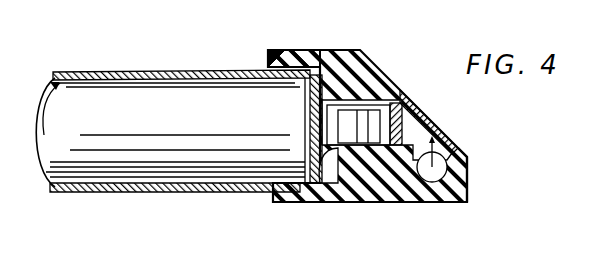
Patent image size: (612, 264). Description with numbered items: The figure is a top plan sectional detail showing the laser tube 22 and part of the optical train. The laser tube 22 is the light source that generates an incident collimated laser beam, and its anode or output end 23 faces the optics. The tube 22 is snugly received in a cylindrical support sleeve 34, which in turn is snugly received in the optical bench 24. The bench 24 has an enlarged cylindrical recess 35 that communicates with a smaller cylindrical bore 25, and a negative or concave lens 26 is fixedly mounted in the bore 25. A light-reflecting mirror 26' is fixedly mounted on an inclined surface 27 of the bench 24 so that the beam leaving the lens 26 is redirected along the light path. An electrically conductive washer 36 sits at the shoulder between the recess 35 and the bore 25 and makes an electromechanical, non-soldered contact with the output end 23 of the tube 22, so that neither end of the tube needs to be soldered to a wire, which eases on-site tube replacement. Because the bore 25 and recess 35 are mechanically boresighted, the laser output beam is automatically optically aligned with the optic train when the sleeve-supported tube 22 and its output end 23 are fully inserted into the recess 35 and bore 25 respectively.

The laser tube 22 is at (115, 165).
The output end 23 is at (380, 90).
The optical bench 24 is at (320, 50).
The cylindrical bore 25 is at (358, 65).
The negative lens 26 is at (389, 175).
The light-reflecting mirror 26' is at (442, 122).
The inclined surface 27 is at (466, 157).
The cylindrical support sleeve 34 is at (172, 70).
The enlarged cylindrical recess 35 is at (300, 52).
The washer 36 is at (336, 148).